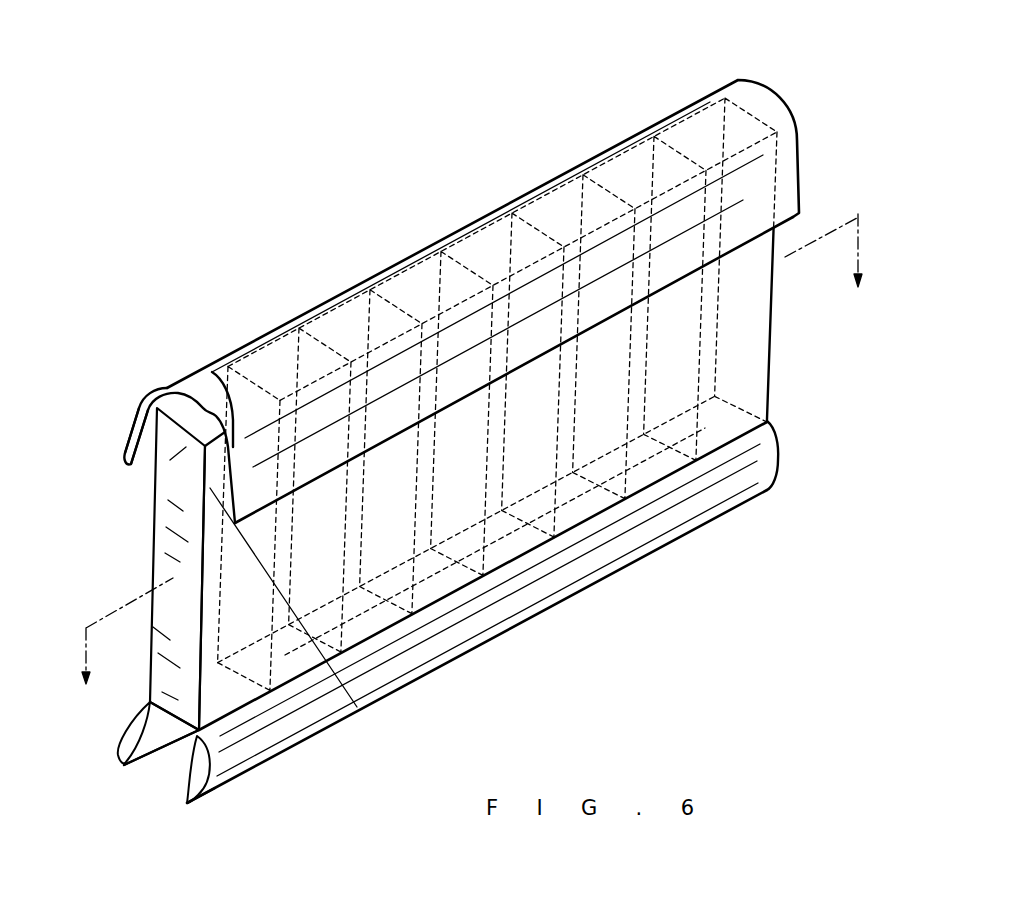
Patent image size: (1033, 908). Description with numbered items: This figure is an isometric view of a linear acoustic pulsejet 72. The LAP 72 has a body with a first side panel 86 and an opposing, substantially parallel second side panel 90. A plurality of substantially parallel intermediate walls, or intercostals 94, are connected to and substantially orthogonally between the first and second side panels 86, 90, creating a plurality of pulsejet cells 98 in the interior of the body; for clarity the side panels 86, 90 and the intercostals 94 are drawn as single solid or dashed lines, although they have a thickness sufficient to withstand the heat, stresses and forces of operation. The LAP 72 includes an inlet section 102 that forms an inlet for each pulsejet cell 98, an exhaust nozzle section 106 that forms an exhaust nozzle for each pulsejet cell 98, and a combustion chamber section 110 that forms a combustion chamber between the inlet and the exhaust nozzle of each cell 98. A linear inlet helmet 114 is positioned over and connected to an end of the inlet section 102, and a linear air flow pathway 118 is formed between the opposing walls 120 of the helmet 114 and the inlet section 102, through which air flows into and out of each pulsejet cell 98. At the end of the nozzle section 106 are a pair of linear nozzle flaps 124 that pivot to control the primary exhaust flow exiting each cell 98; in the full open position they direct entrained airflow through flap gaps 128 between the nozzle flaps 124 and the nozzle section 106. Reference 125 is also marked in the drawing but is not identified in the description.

The linear acoustic pulsejet 72 is at (798, 101).
The linear inlet helmet 114 is at (748, 78).
The inlet section 102 is at (143, 470).
The opposing walls 120 is at (133, 426).
The linear air flow pathway 118 is at (180, 450).
The first side panel 86 is at (152, 563).
The combustion chamber section 110 is at (230, 467).
The second side panel 90 is at (148, 703).
The linear nozzle flaps 124 is at (118, 752).
The exhaust nozzle section 106 is at (133, 757).
The slot 125 is at (182, 747).
The flap gaps 128 is at (766, 418).
The intercostals 94 is at (768, 358).
The pulsejet cells 98 is at (219, 397).